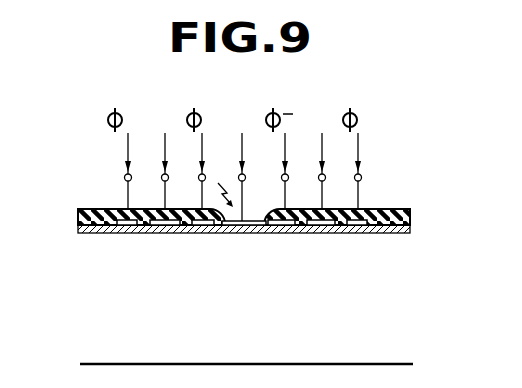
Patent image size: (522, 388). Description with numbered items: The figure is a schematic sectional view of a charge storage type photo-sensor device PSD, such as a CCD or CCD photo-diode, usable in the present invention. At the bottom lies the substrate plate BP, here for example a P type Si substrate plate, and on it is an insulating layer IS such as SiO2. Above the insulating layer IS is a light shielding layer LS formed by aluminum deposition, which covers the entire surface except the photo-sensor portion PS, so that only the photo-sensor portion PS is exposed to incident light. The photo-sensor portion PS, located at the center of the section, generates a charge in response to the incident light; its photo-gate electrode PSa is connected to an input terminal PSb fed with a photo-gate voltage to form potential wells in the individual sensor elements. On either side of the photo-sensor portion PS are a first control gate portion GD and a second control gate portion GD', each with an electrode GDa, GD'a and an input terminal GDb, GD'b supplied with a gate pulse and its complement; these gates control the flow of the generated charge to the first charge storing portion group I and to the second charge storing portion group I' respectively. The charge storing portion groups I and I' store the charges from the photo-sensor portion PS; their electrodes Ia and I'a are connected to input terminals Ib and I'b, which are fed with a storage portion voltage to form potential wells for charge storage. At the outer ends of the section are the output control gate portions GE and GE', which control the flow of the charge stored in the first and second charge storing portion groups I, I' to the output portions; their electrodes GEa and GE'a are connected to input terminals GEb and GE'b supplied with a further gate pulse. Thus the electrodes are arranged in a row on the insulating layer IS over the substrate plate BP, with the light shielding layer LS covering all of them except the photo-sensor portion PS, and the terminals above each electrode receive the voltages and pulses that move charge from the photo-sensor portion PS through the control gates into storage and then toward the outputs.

The photo-sensor device PSD is at (252, 200).
The light shielding layer LS is at (454, 213).
The insulating layer IS is at (454, 246).
The substrate plate BP is at (113, 349).
The output control gate portion GE is at (134, 212).
The electrode GEa is at (128, 233).
The input terminal GEb is at (143, 157).
The first charge storing portion group I is at (168, 212).
The electrode Ia is at (165, 233).
The input terminal Ib is at (175, 157).
The first control gate portion GD is at (214, 212).
The electrode GDa is at (202, 233).
The input terminal GDb is at (220, 157).
The photo-sensor portion PS is at (246, 212).
The photo-gate electrode PSa is at (243, 233).
The input terminal PSb is at (257, 157).
The second control gate portion GD' is at (292, 212).
The electrode GD'a is at (290, 249).
The input terminal GD'b is at (300, 157).
The second charge storing portion group I' is at (327, 212).
The electrode I'a is at (321, 249).
The input terminal I'b is at (333, 157).
The output control gate portion GE' is at (370, 212).
The electrode GE'a is at (363, 249).
The input terminal GE'b is at (377, 157).